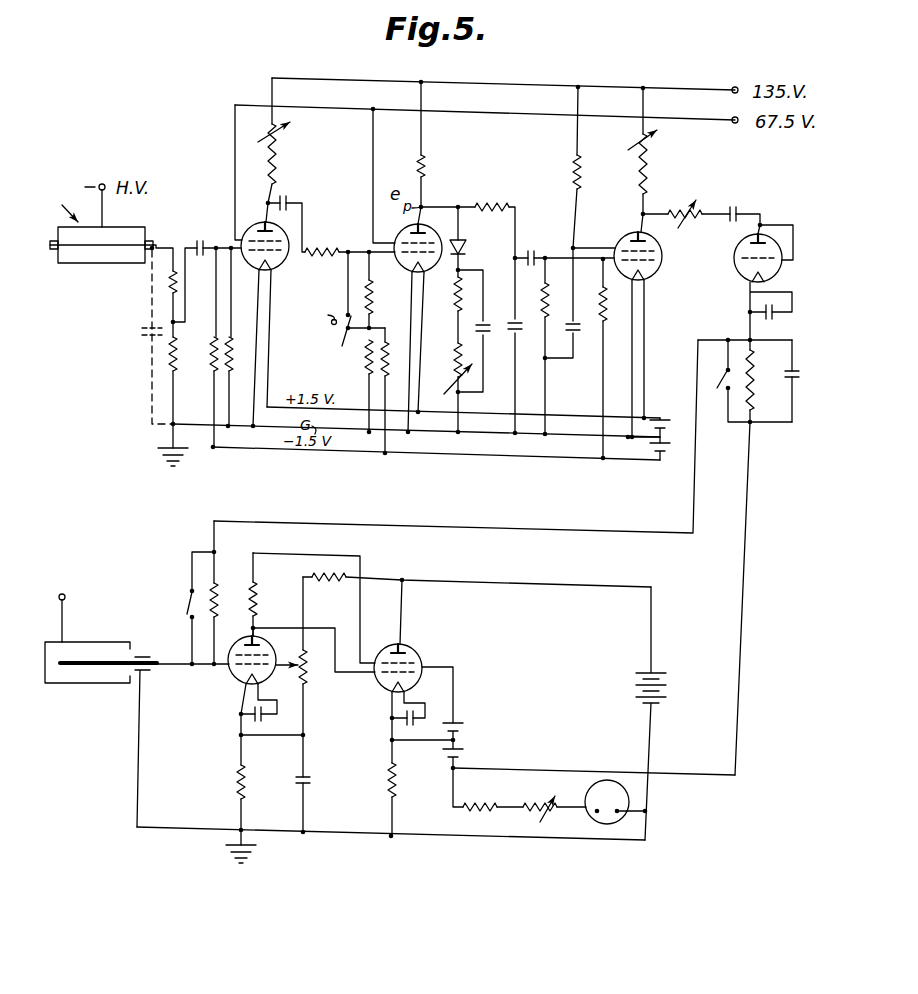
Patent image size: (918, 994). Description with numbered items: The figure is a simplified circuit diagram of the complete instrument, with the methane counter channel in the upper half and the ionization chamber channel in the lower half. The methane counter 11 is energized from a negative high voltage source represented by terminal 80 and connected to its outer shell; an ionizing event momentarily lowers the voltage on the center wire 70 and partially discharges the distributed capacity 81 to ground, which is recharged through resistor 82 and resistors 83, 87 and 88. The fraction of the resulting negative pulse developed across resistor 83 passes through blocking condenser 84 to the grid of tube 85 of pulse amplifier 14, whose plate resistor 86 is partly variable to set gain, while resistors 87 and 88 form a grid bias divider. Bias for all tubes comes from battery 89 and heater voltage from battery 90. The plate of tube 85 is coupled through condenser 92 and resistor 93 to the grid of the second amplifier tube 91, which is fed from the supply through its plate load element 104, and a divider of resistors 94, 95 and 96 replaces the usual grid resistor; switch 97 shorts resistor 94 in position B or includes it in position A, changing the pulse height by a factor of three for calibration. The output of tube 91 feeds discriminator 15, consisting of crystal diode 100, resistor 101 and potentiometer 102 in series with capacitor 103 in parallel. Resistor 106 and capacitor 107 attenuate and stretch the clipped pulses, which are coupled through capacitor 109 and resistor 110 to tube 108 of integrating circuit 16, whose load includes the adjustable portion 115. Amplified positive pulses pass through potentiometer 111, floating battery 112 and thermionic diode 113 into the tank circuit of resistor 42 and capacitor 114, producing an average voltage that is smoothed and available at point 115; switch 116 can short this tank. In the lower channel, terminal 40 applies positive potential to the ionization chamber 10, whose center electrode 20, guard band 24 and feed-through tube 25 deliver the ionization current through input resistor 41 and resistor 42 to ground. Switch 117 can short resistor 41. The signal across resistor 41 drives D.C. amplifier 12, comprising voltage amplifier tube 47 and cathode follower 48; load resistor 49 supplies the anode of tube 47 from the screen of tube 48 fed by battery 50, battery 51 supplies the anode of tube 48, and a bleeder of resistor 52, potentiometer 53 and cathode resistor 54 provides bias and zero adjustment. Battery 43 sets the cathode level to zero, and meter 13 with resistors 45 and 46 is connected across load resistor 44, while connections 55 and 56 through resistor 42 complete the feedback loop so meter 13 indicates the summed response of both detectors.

The high voltage terminal 80 is at (101, 183).
The methane counter 11 is at (63, 208).
The center wire 70 is at (118, 240).
The resistor 82 is at (165, 304).
The resistor 83 is at (172, 362).
The distributed capacity 81 is at (140, 336).
The blocking condenser 84 is at (201, 241).
The resistor 88 is at (211, 356).
The resistor 87 is at (228, 368).
The plate resistor 86 is at (269, 172).
The pulse amplifier 14 is at (287, 178).
The condenser 92 is at (285, 196).
The tube 85 is at (283, 262).
The resistor 93 is at (318, 249).
The switch 97 is at (340, 329).
The resistor 94 is at (372, 294).
The resistor 95 is at (365, 361).
The resistor 96 is at (386, 378).
The amplifier tube 91 is at (404, 232).
The resistor 104 is at (419, 172).
The discriminator 15 is at (431, 196).
The resistor 106 is at (496, 193).
The crystal diode 100 is at (464, 248).
The resistor 101 is at (455, 298).
The potentiometer 102 is at (456, 352).
The capacitor 103 is at (487, 324).
The capacitor 109 is at (530, 251).
The resistor 110 is at (546, 296).
The capacitor 107 is at (524, 327).
The adjustable load resistor portion 115 is at (650, 146).
The tube 108 is at (655, 278).
The integrating circuit 16 is at (662, 196).
The potentiometer 111 is at (689, 228).
The battery 112 is at (736, 208).
The thermionic diode 113 is at (733, 264).
The switch 116 is at (727, 381).
The resistor 42 is at (753, 372).
The capacitor 114 is at (784, 380).
The battery 90 is at (666, 417).
The battery 89 is at (663, 461).
The connection 56 is at (470, 524).
The switch 117 is at (189, 602).
The input resistor 41 is at (215, 612).
The load resistor 49 is at (258, 597).
The terminal 40 is at (66, 593).
The ionization chamber 10 is at (83, 632).
The center electrode 20 is at (95, 660).
The conducting band 24 is at (146, 655).
The feed-through tube 25 is at (153, 672).
The voltage amplifier tube 47 is at (232, 676).
The D.C. amplifier 12 is at (223, 702).
The cathode resistor 54 is at (238, 780).
The potentiometer 53 is at (309, 678).
The resistor 52 is at (326, 581).
The cathode follower power output tube 48 is at (423, 650).
The load resistor 44 is at (389, 782).
The battery 50 is at (466, 722).
The battery 43 is at (466, 750).
The connection 55 is at (701, 773).
The resistor 45 is at (484, 803).
The resistor 46 is at (534, 804).
The meter 13 is at (589, 790).
The battery 51 is at (668, 677).